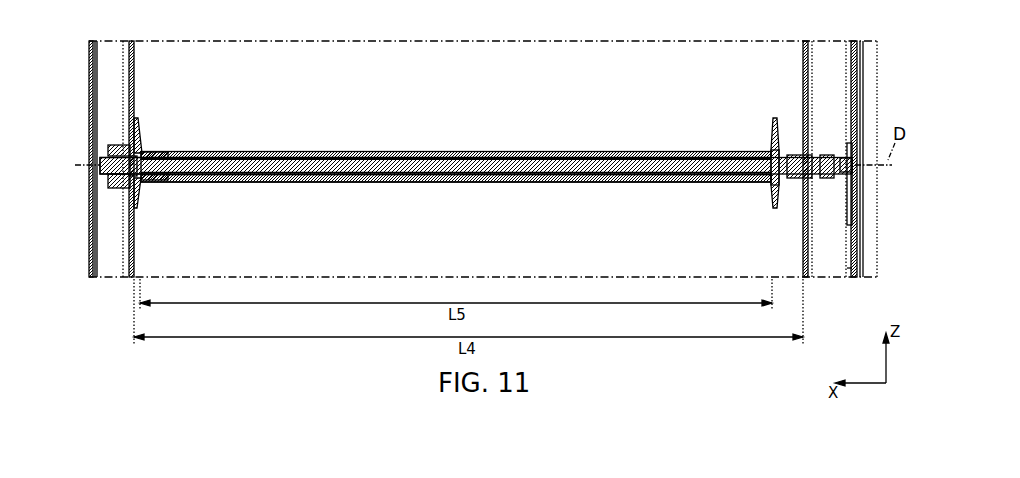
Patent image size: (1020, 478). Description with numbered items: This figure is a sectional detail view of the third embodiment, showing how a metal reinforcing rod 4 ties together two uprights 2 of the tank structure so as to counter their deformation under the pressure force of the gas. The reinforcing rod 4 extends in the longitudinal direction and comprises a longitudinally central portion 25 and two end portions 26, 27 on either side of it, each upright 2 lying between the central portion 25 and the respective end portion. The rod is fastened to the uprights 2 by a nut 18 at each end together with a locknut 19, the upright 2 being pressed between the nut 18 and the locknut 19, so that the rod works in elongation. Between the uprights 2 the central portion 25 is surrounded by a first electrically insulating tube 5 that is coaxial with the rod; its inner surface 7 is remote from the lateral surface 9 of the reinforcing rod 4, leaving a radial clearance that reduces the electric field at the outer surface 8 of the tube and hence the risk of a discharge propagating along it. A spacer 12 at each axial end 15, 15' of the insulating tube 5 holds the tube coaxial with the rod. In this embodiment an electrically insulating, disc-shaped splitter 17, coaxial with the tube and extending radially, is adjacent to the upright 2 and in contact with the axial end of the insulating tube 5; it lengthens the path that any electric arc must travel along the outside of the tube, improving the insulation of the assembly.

The upright 2 is at (112, 72).
The metal reinforcing rod 4 is at (435, 152).
The first electrically insulating tube 5 is at (279, 152).
The inner surface 7 is at (299, 181).
The outer surface 8 is at (260, 181).
The lateral surface 9 is at (388, 160).
The spacer 12 is at (153, 150).
The axial end 15 is at (152, 192).
The axial end 15' is at (760, 188).
The splitter 17 is at (135, 125).
The nut 18 is at (110, 150).
The locknut 19 is at (795, 153).
The longitudinally central portion 25 is at (353, 164).
The end portion 26 is at (100, 164).
The end portion 27 is at (843, 174).